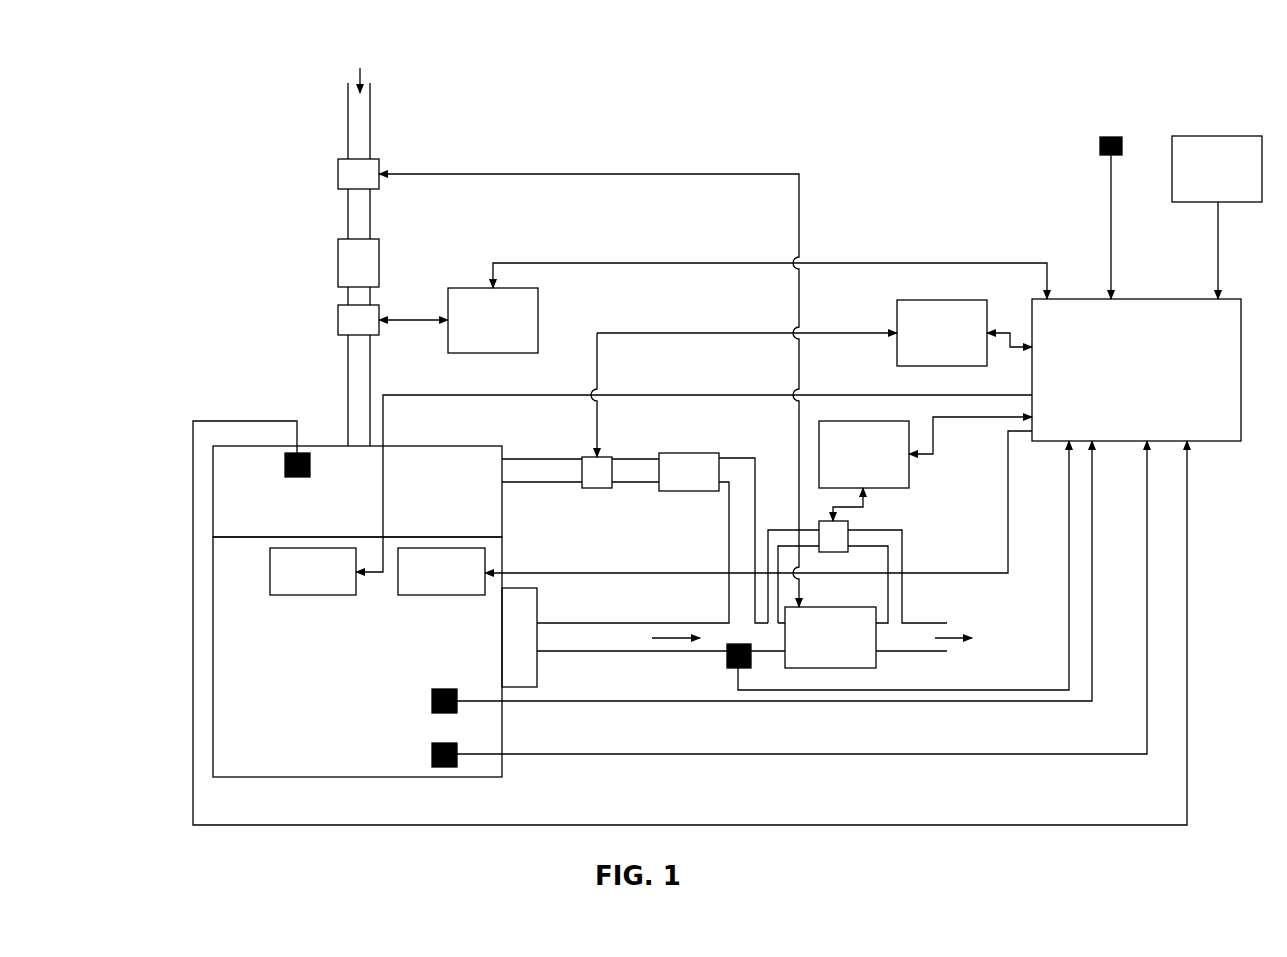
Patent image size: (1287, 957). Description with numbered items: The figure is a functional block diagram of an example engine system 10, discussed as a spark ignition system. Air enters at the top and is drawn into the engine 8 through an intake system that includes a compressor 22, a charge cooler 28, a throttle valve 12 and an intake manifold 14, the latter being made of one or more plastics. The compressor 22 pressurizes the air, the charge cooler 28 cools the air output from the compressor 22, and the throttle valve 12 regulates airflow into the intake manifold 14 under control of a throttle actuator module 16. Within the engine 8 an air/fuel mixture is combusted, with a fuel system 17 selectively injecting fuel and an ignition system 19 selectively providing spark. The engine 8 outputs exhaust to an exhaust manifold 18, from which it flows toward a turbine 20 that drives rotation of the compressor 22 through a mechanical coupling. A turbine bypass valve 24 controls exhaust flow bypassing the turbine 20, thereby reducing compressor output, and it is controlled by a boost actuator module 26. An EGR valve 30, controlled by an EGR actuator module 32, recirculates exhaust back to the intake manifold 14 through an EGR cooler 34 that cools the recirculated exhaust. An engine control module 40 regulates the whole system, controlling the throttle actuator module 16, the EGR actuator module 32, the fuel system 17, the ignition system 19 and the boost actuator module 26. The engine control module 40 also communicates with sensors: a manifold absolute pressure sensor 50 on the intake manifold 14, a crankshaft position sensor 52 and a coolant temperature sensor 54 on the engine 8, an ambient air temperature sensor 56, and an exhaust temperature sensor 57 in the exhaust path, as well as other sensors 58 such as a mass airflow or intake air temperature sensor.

The engine 8 is at (435, 777).
The engine system 10 is at (212, 73).
The throttle valve 12 is at (338, 331).
The intake manifold 14 is at (472, 446).
The throttle actuator module 16 is at (448, 340).
The fuel system 17 is at (444, 595).
The exhaust manifold 18 is at (537, 607).
The ignition system 19 is at (313, 595).
The turbine 20 is at (825, 607).
The compressor 22 is at (338, 173).
The turbine bypass valve 24 is at (848, 524).
The boost actuator module 26 is at (909, 472).
The charge cooler 28 is at (338, 266).
The EGR valve 30 is at (596, 488).
The EGR actuator module 32 is at (897, 352).
The EGR cooler 34 is at (685, 491).
The engine control module 40 is at (1241, 370).
The manifold absolute pressure sensor 50 is at (297, 477).
The crankshaft position sensor 52 is at (445, 743).
The coolant temperature sensor 54 is at (445, 689).
The ambient air temperature sensor 56 is at (1120, 140).
The exhaust temperature sensor 57 is at (727, 660).
The other sensors 58 is at (1220, 136).